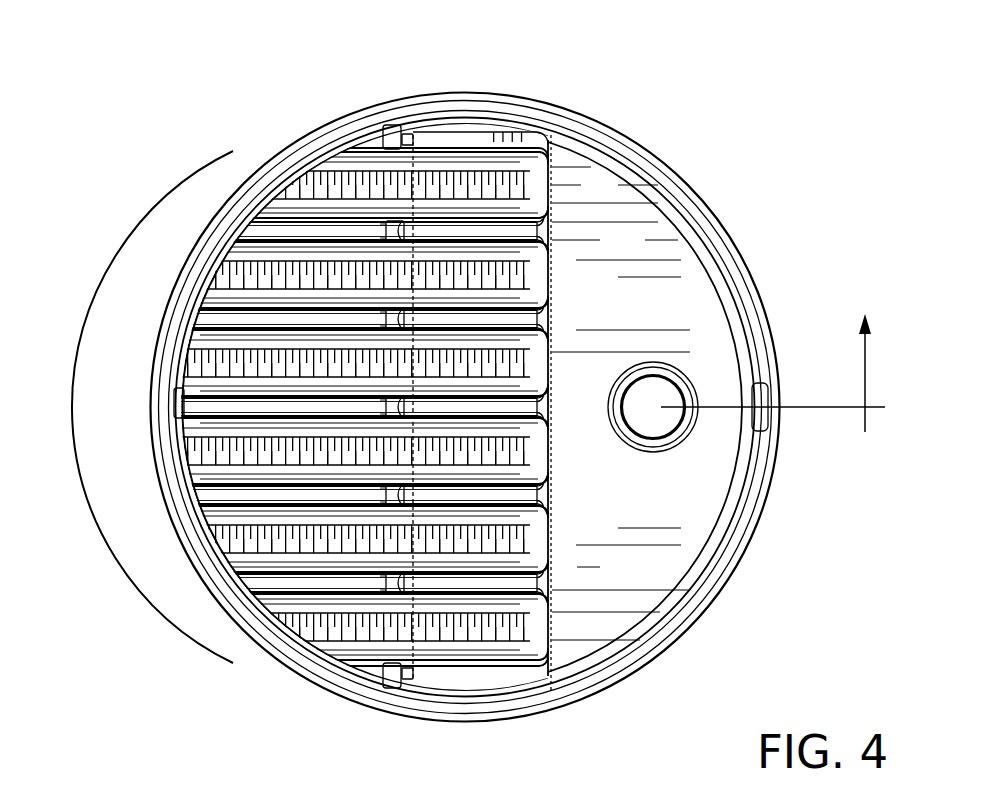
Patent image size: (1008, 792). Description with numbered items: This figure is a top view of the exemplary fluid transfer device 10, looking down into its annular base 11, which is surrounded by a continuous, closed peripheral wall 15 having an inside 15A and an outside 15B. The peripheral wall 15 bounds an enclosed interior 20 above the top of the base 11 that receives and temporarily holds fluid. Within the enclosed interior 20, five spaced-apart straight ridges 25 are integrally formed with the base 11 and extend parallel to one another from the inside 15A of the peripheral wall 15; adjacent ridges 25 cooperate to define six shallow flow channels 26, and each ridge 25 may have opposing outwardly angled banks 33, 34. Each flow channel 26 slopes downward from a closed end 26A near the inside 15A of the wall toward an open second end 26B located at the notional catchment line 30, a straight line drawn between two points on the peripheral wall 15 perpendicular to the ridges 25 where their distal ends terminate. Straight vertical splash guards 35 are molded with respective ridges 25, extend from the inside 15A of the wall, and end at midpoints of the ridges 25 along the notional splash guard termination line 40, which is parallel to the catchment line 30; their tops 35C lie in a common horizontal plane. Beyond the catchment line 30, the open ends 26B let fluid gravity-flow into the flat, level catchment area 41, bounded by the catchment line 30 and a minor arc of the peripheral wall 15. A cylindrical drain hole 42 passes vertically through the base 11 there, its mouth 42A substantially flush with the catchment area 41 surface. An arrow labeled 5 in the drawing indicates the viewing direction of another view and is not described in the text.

The fluid transfer device 10 is at (662, 101).
The annular base 11 is at (152, 385).
The peripheral wall 15 is at (283, 153).
The inside of peripheral wall 15A is at (692, 262).
The outside of peripheral wall 15B is at (670, 165).
The enclosed interior 20 is at (685, 407).
The straight ridges 25 is at (547, 567).
The shallow flow channels 26 is at (300, 193).
The closed end of flow channel 26A is at (228, 545).
The open second end of flow channel 26B is at (545, 353).
The catchment line 30 is at (550, 152).
The outwardly angled bank 33 is at (522, 210).
The outwardly angled bank 34 is at (552, 258).
The splash guards 35 is at (233, 315).
The tops of splash guards 35C is at (298, 497).
The splash guard termination line 40 is at (418, 135).
The catchment area 41 is at (637, 578).
The drain hole 42 is at (665, 407).
The mouth of drain hole 42A is at (667, 437).
The direction arrow 5 is at (773, 391).